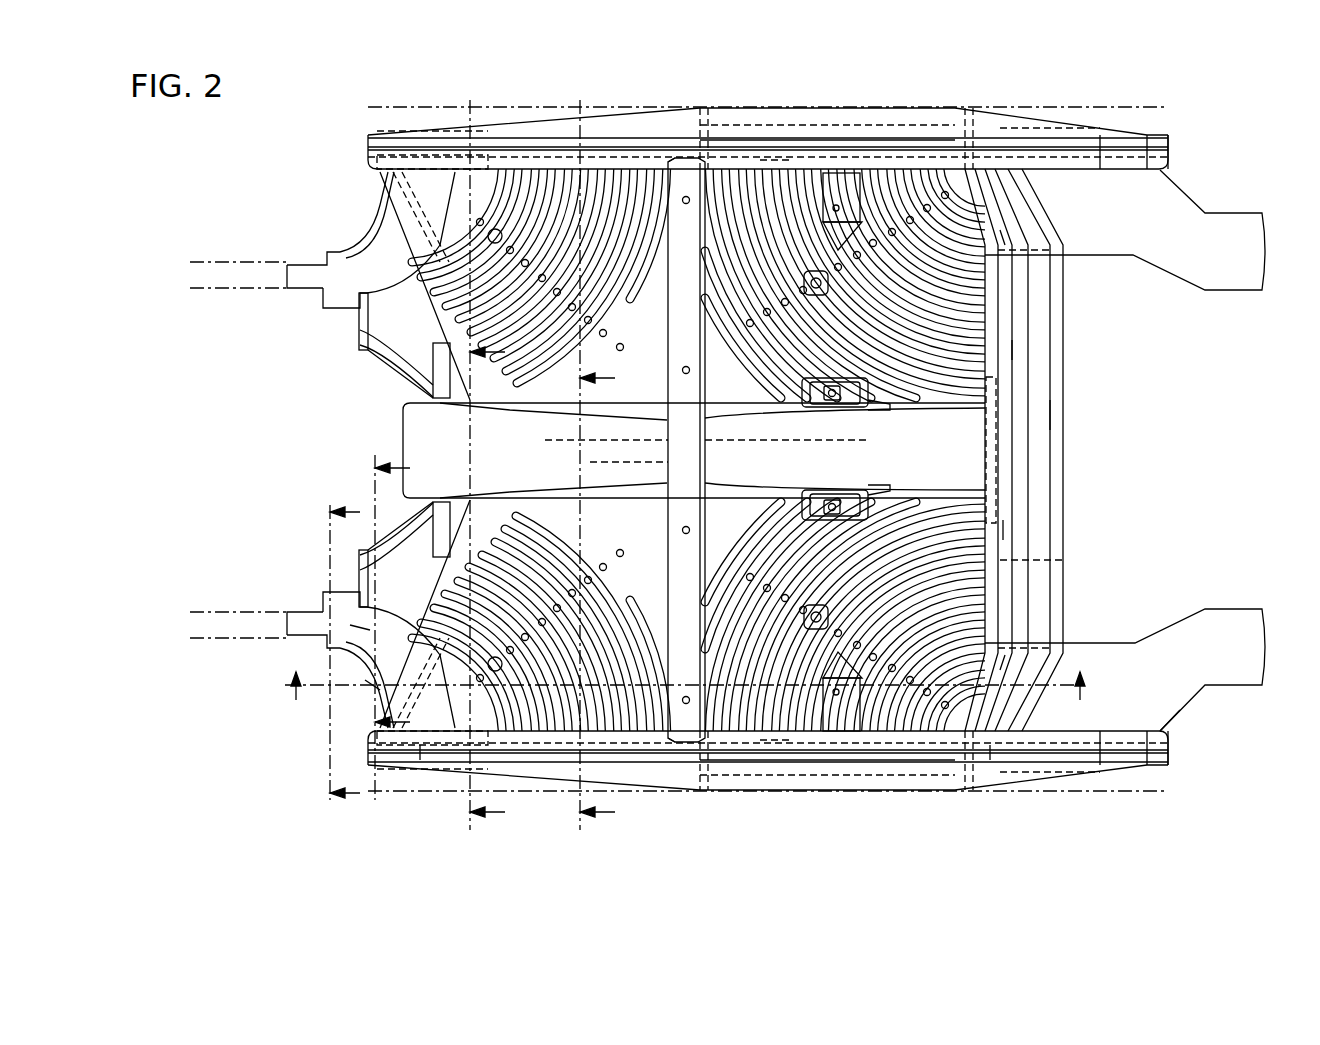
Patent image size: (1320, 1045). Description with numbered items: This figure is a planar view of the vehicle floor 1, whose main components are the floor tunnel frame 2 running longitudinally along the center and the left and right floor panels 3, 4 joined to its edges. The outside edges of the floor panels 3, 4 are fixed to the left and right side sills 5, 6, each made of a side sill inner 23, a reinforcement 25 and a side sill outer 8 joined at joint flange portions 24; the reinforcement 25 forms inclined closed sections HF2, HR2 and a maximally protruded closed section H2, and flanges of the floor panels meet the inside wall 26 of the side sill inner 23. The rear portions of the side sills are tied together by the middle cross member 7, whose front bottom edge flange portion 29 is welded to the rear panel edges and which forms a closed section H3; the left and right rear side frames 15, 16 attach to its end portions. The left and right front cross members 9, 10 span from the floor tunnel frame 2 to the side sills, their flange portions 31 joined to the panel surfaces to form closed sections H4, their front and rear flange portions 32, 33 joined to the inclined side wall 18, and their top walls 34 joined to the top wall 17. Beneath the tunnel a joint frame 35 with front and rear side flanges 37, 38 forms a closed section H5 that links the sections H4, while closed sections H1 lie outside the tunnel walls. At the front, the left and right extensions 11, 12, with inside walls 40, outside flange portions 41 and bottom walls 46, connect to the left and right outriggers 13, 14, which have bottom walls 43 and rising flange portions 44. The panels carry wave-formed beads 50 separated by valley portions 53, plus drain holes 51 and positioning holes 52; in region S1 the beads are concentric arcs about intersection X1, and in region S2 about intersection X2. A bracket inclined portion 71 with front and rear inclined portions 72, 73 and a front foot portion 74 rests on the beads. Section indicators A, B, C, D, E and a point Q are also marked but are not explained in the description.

The floor 1 is at (935, 92).
The floor tunnel frame 2 is at (1069, 440).
The left floor panel 3 is at (790, 760).
The right floor panel 4 is at (800, 170).
The left side sill 5 is at (862, 790).
The right side sill 6 is at (748, 108).
The middle cross member 7 is at (1050, 470).
The side sill outer 8 is at (1093, 105).
The left front cross member 9 is at (686, 745).
The right front cross member 10 is at (686, 170).
The left extension 11 is at (360, 560).
The right extension 12 is at (380, 350).
The left outrigger 13 is at (300, 628).
The right outrigger 14 is at (300, 270).
The left rear side frame 15 is at (1235, 609).
The right rear side frame 16 is at (1235, 290).
The top wall 17 is at (810, 460).
The inclined side wall 18 is at (800, 495).
The side sill inner 23 is at (1172, 160).
The joint flange portion 24 is at (1140, 137).
The reinforcement 25 is at (1172, 135).
The inside wall 26 is at (1182, 697).
The front bottom edge flange portion 29 is at (1005, 350).
The flange portion 31 is at (657, 320).
The front flange portion 32 is at (667, 412).
The rear flange portion 33 is at (705, 412).
The top wall 34 is at (669, 162).
The joint frame 35 is at (705, 450).
The front side flange 37 is at (590, 462).
The rear side flange 38 is at (862, 405).
The inside wall 40 is at (435, 380).
The flange portion 41 is at (360, 322).
The bottom wall 43 is at (360, 230).
The rising flange portion 44 is at (325, 305).
The bottom wall 46 is at (400, 360).
The wave-formed bead 50 is at (545, 230).
The drain hole 51 is at (518, 230).
The positioning hole 52 is at (493, 228).
The valley portion 53 is at (602, 175).
The inclined portion 71 is at (1045, 415).
The front inclined portion 72 is at (1000, 240).
The rear inclined portion 73 is at (1040, 252).
The front foot portion 74 is at (225, 262).
The closed section structure H1 is at (996, 390).
The maximally protruded closed section structure H2 is at (865, 120).
The closed section structure H3 is at (1040, 560).
The closed section structure H4 is at (775, 170).
The closed section structure H5 is at (560, 440).
The inclined closed section structure HF2 is at (585, 122).
The inclined closed section structure HR2 is at (1040, 110).
The region S1 is at (370, 680).
The region S2 is at (1003, 530).
The intersection X1 is at (425, 745).
The intersection X2 is at (990, 745).
The point Q is at (360, 625).
The section A is at (346, 651).
The section B is at (398, 622).
The section C is at (490, 470).
The section D is at (600, 470).
The section E is at (688, 697).